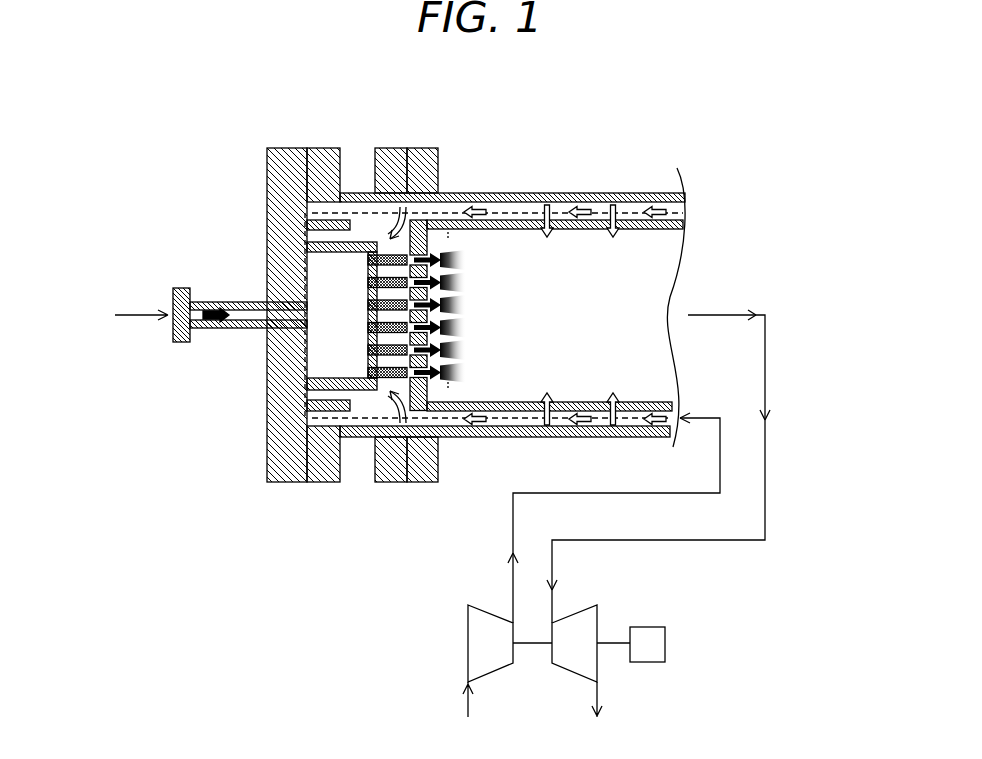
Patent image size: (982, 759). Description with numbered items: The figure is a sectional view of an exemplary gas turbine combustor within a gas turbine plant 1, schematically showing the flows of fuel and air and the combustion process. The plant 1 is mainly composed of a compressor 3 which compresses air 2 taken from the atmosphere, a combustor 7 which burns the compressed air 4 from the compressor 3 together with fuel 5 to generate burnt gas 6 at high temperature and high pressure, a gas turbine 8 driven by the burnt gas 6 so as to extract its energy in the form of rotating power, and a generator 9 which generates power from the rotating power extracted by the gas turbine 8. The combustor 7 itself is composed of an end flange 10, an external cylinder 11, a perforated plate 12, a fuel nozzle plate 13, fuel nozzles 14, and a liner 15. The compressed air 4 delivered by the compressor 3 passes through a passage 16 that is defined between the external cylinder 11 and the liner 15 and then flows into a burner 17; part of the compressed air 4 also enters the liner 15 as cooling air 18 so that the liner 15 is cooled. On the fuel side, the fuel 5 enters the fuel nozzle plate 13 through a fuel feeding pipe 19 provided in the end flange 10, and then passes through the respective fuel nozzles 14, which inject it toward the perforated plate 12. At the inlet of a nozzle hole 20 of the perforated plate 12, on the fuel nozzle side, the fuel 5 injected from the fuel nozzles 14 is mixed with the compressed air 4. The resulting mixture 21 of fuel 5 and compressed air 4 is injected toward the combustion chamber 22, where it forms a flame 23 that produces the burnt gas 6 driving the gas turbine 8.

The gas turbine plant 1 is at (752, 140).
The air 2 is at (465, 704).
The compressor 3 is at (478, 630).
The compressed air 4 is at (588, 492).
The fuel 5 is at (130, 310).
The burnt gas 6 is at (722, 313).
The combustor 7 is at (510, 135).
The gas turbine 8 is at (578, 618).
The generator 9 is at (648, 632).
The end flange 10 is at (287, 150).
The external cylinder 11 is at (393, 152).
The perforated plate 12 is at (433, 236).
The fuel nozzle plate 13 is at (365, 257).
The fuel nozzles 14 is at (362, 297).
The liner 15 is at (630, 406).
The passage 16 is at (604, 208).
The burner 17 is at (432, 405).
The cooling air 18 is at (618, 234).
The fuel feeding pipe 19 is at (210, 303).
The nozzle hole 20 is at (452, 278).
The mixture 21 is at (462, 300).
The combustion chamber 22 is at (560, 313).
The flame 23 is at (458, 328).